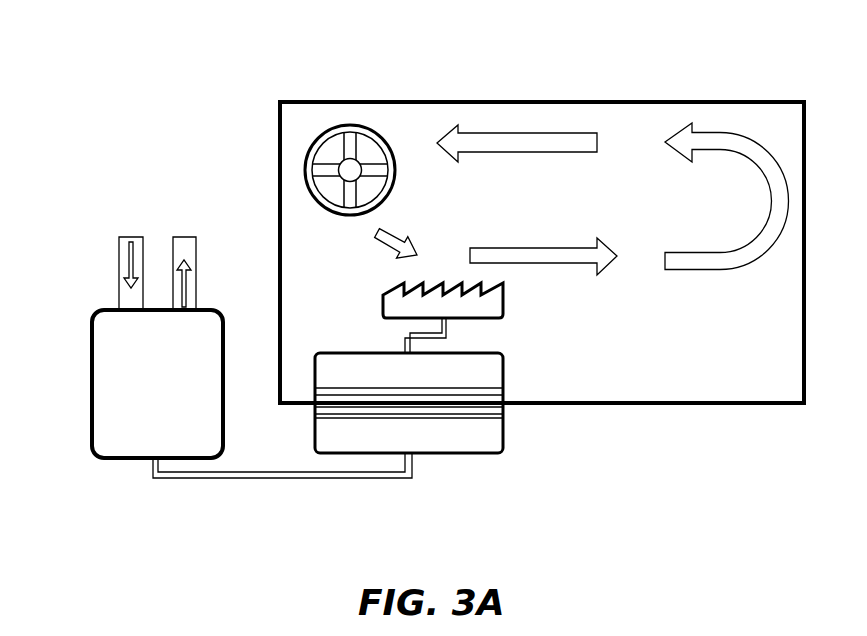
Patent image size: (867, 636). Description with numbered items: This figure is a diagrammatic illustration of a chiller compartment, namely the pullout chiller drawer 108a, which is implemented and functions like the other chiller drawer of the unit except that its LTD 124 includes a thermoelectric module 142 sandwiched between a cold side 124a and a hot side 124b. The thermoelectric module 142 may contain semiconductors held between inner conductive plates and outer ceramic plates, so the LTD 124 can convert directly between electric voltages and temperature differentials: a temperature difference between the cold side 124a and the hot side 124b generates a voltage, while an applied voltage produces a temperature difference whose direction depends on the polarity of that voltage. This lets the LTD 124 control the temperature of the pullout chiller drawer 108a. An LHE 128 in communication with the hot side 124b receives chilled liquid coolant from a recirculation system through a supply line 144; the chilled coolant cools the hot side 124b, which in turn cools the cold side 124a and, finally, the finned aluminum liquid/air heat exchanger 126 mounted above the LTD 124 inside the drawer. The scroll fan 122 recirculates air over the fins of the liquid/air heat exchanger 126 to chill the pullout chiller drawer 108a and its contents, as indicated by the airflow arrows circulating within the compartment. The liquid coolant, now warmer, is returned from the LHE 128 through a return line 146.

The pullout chiller drawer 108a is at (80, 67).
The scroll fan 122 is at (305, 170).
The LTD 124 is at (445, 430).
The cold side 124a is at (368, 381).
The hot side 124b is at (368, 446).
The finned aluminum liquid/air heat exchanger 126 is at (382, 302).
The LHE 128 is at (173, 411).
The thermoelectric module 142 is at (487, 401).
The supply line 144 is at (118, 280).
The return line 146 is at (185, 235).